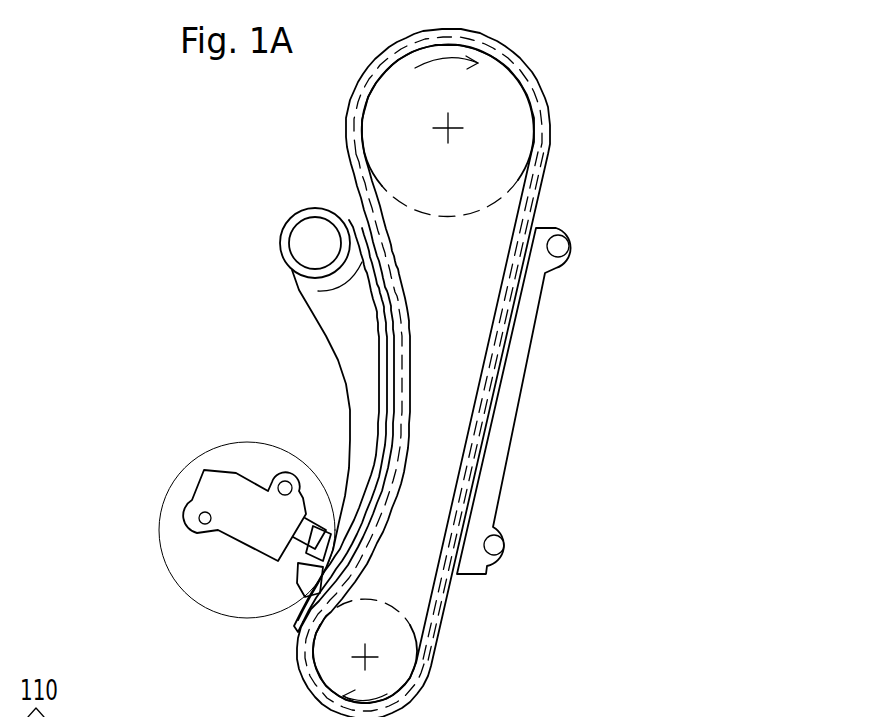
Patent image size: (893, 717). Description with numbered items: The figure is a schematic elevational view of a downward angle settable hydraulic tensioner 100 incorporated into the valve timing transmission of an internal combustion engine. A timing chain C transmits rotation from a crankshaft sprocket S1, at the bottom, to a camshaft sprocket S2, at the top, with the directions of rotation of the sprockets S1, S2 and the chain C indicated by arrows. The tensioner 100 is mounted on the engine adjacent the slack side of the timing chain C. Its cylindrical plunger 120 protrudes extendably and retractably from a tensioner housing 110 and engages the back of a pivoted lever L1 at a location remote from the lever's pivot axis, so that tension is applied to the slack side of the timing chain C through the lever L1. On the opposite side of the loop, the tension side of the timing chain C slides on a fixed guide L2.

The timing chain C is at (530, 48).
The camshaft sprocket S2 is at (503, 118).
The crankshaft sprocket S1 is at (396, 665).
The pivoted lever L1 is at (335, 358).
The fixed guide L2 is at (523, 380).
The downward angle settable hydraulic tensioner 100 is at (186, 530).
The tensioner housing 110 is at (237, 533).
The cylindrical plunger 120 is at (274, 564).